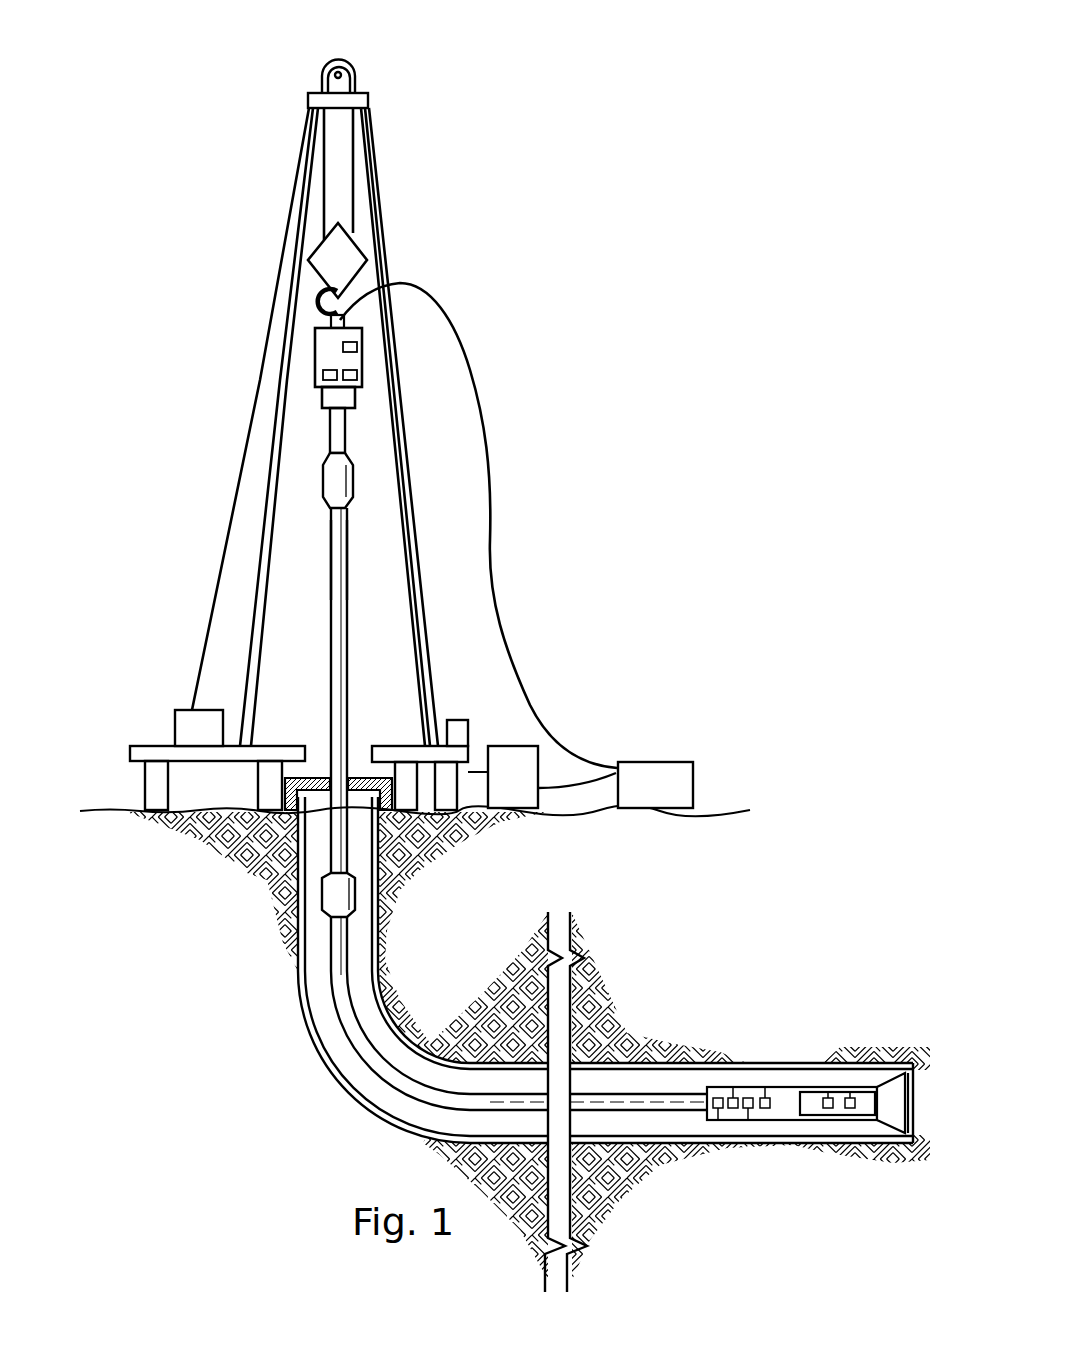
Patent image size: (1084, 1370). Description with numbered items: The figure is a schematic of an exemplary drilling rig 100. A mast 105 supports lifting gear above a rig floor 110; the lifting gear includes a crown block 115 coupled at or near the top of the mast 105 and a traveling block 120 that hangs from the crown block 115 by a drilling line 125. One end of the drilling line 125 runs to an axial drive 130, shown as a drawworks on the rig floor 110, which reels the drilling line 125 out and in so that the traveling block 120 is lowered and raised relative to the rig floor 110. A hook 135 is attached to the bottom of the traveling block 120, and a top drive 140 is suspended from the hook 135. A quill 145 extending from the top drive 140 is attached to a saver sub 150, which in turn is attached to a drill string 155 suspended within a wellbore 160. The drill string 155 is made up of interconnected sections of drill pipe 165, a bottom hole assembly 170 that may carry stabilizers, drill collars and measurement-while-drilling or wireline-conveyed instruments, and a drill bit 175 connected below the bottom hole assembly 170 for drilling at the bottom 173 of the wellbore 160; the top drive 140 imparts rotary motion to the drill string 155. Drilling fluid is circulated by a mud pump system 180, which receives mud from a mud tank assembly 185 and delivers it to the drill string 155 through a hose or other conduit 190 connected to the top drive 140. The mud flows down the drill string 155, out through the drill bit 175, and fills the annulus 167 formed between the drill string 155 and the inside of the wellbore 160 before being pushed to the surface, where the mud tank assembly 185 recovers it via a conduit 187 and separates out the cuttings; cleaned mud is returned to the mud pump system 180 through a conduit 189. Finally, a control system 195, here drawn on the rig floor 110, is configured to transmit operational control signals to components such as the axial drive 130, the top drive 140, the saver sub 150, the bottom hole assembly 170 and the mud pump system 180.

The drilling rig 100 is at (730, 140).
The mast 105 is at (375, 156).
The rig floor 110 is at (130, 750).
The crown block 115 is at (337, 62).
The traveling block 120 is at (365, 270).
The drilling line 125 is at (323, 161).
The axial drive 130 is at (175, 728).
The hook 135 is at (317, 302).
The top drive 140 is at (313, 356).
The quill 145 is at (327, 434).
The saver sub 150 is at (323, 482).
The drill string 155 is at (314, 560).
The wellbore 160 is at (322, 1032).
The drill pipe 165 is at (330, 728).
The annulus 167 is at (687, 1078).
The bottom hole assembly 170 is at (850, 1130).
The bottom 173 is at (917, 1140).
The drill bit 175 is at (888, 1080).
The mud pump system 180 is at (657, 760).
The mud tank assembly 185 is at (508, 745).
The conduit 187 is at (470, 775).
The conduit 189 is at (580, 795).
The hose or other conduit 190 is at (490, 477).
The control system 195 is at (455, 720).